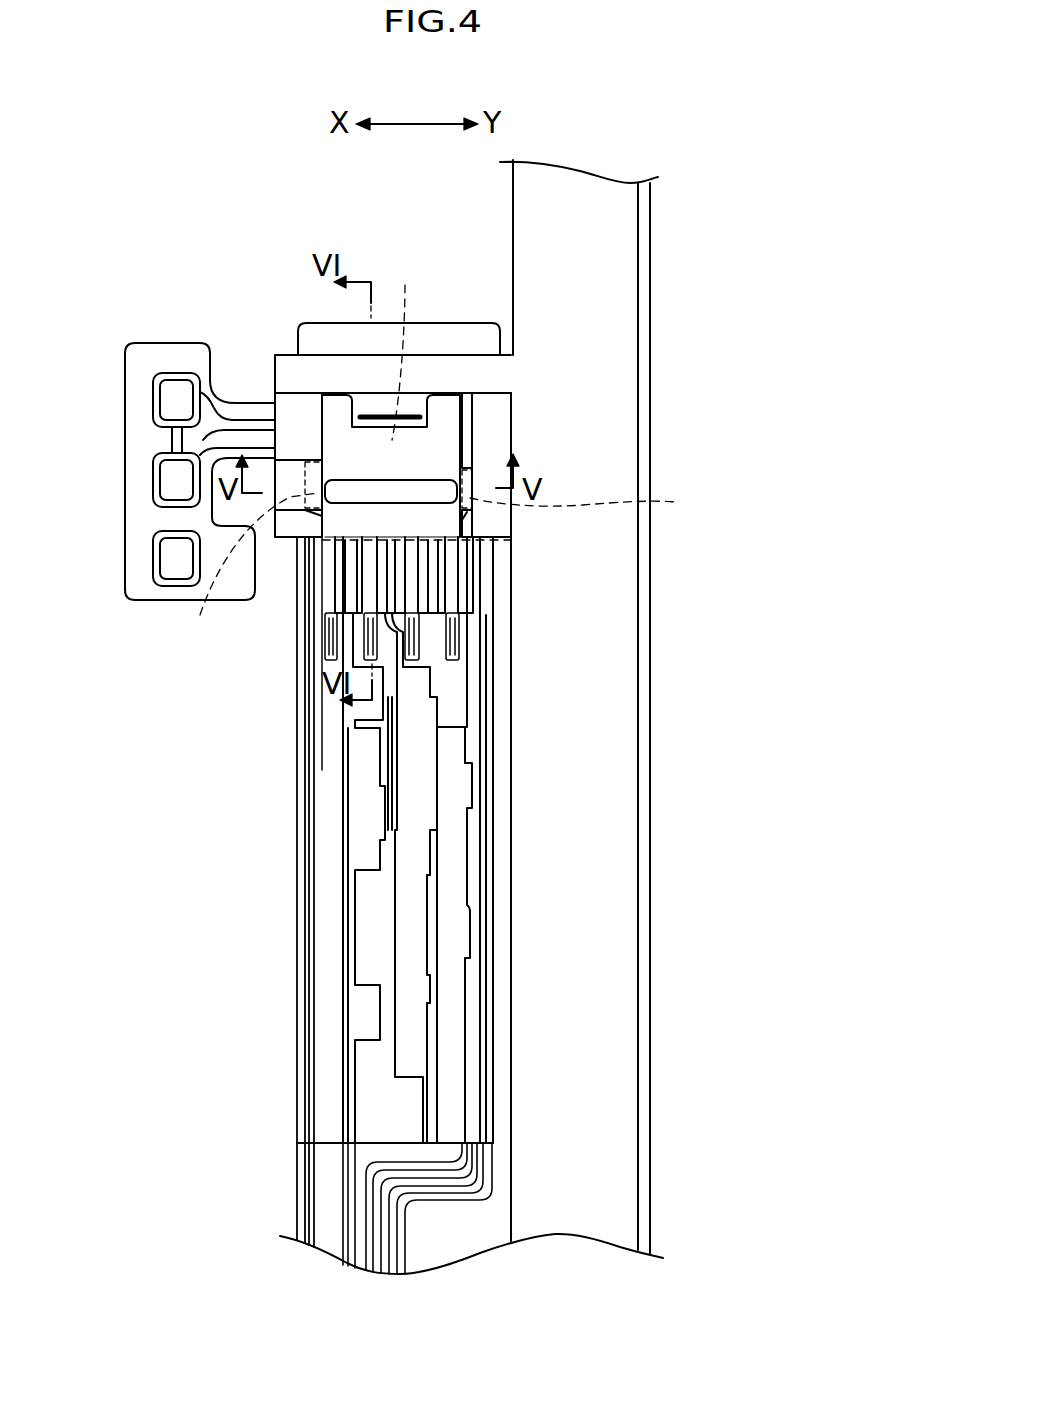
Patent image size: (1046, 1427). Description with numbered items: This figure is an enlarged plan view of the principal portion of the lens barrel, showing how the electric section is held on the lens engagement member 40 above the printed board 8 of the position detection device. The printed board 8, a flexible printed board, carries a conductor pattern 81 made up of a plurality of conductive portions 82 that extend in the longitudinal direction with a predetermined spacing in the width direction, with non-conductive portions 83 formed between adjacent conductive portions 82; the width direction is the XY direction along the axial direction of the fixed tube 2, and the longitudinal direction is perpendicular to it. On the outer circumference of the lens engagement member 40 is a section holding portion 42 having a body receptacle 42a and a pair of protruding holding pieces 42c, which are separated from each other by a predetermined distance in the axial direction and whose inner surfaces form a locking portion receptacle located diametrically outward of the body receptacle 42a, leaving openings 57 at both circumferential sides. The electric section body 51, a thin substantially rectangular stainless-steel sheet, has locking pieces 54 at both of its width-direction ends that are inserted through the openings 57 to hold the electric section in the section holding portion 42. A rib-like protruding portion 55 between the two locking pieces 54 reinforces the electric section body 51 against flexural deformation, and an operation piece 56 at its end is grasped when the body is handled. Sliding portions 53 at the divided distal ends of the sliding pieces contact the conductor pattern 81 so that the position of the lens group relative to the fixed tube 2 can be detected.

The fixed tube 2 is at (295, 955).
The printed board 8 is at (513, 1105).
The lens engagement member 40 is at (505, 370).
The section holding portion 42 is at (307, 427).
The body receptacle 42a is at (412, 347).
The holding pieces 42c is at (312, 455).
The electric section body 51 is at (436, 440).
The sliding portion 53 is at (328, 648).
The locking pieces 54 is at (452, 566).
The rib-like protruding portion 55 is at (435, 487).
The operation piece 56 is at (410, 412).
The openings 57 is at (305, 514).
The conductor pattern 81 is at (290, 1028).
The conductive portions 82 is at (364, 768).
The non-conductive portions 83 is at (372, 730).